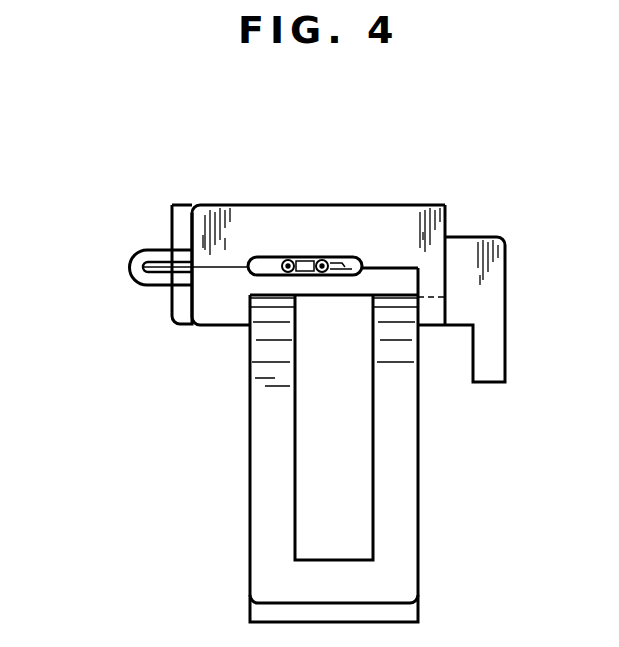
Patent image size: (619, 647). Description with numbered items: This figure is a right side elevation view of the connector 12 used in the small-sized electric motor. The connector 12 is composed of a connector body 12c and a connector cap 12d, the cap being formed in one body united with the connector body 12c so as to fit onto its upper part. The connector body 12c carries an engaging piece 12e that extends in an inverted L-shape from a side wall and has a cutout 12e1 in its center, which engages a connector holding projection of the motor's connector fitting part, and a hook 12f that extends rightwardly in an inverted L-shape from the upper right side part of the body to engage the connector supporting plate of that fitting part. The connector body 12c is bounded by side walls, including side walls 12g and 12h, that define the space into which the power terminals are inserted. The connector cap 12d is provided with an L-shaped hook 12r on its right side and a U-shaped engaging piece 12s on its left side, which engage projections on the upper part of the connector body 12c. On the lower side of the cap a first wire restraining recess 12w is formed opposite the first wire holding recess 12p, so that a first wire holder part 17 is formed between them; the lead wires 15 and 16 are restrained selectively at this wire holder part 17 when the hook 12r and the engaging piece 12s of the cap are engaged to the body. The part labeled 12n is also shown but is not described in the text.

The connector 12 is at (290, 206).
The connector cap 12d is at (205, 205).
The U-shaped engaging piece 12s is at (183, 305).
The positioning tab 12n is at (130, 268).
The lead wire 15 is at (272, 257).
The first wire holding recess 12p is at (258, 283).
The first wire holder part 17 is at (292, 258).
The lead wire 16 is at (330, 258).
The first wire restraining recess 12w is at (352, 258).
The L-shaped hook 12r is at (427, 312).
The hook 12f is at (490, 360).
The connector body 12c is at (250, 508).
The engaging piece 12e is at (270, 445).
The cutout 12e1 is at (287, 382).
The side wall 12g is at (350, 496).
The side wall 12h is at (252, 603).